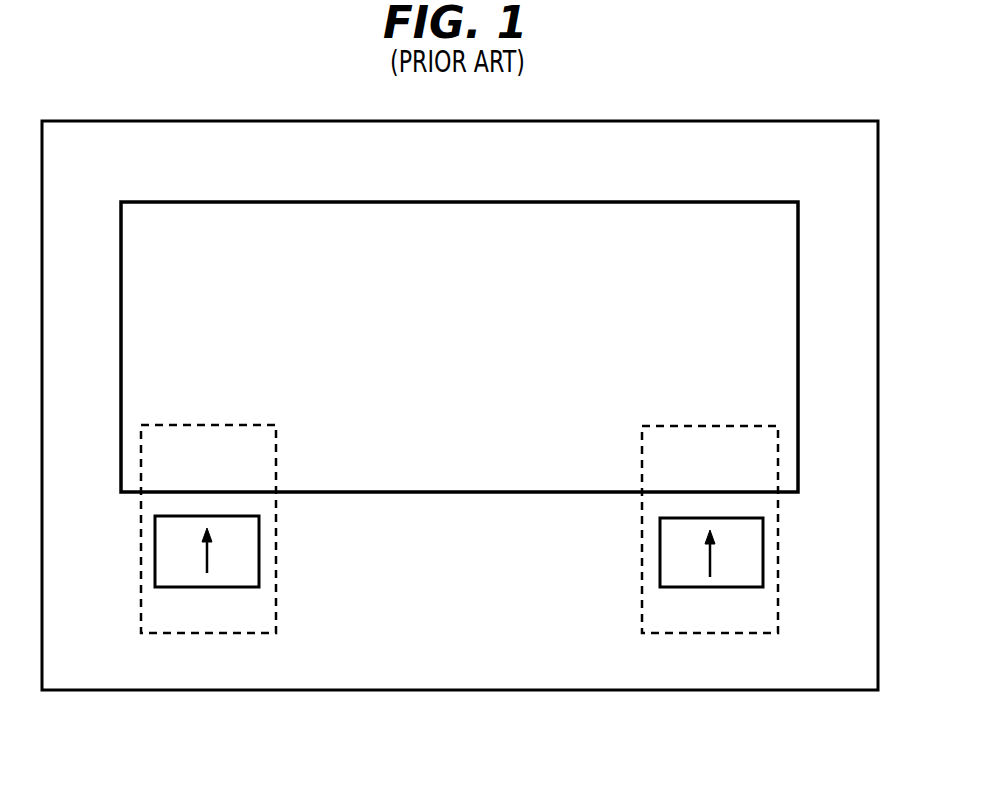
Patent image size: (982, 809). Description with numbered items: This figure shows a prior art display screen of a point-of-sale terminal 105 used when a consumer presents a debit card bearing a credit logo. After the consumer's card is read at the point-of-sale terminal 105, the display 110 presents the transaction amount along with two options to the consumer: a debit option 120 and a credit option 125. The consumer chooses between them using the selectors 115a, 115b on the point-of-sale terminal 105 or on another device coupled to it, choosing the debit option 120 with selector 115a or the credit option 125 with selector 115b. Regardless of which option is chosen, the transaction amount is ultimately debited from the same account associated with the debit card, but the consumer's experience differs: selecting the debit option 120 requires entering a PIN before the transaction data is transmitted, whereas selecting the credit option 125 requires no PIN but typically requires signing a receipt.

The point-of-sale terminal 105 is at (682, 692).
The display 110 is at (455, 494).
The selector 115a is at (260, 550).
The selector 115b is at (660, 553).
The debit option 120 is at (140, 593).
The credit option 125 is at (778, 596).